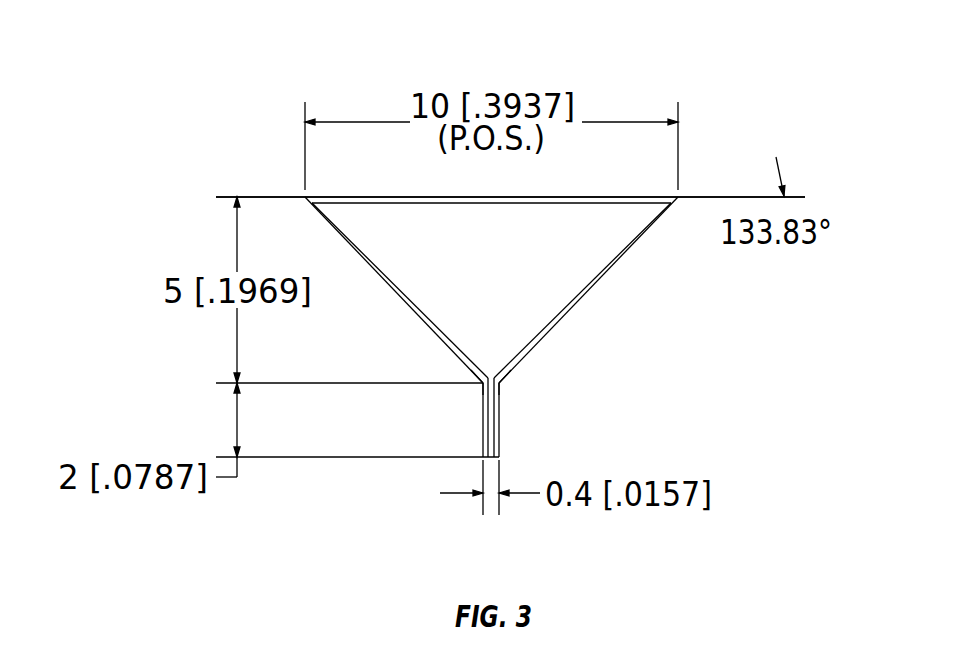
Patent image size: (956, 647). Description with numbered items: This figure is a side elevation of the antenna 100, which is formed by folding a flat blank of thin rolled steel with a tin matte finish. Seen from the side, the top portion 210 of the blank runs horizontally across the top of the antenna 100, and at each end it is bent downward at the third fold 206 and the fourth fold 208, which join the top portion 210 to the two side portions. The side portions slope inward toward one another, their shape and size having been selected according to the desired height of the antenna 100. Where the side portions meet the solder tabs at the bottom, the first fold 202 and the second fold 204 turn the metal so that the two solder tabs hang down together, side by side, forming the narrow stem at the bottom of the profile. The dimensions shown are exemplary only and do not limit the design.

The antenna 100 is at (108, 50).
The first fold 202 is at (478, 387).
The second fold 204 is at (505, 387).
The third fold 206 is at (298, 192).
The fourth fold 208 is at (688, 192).
The top portion 210 is at (355, 197).